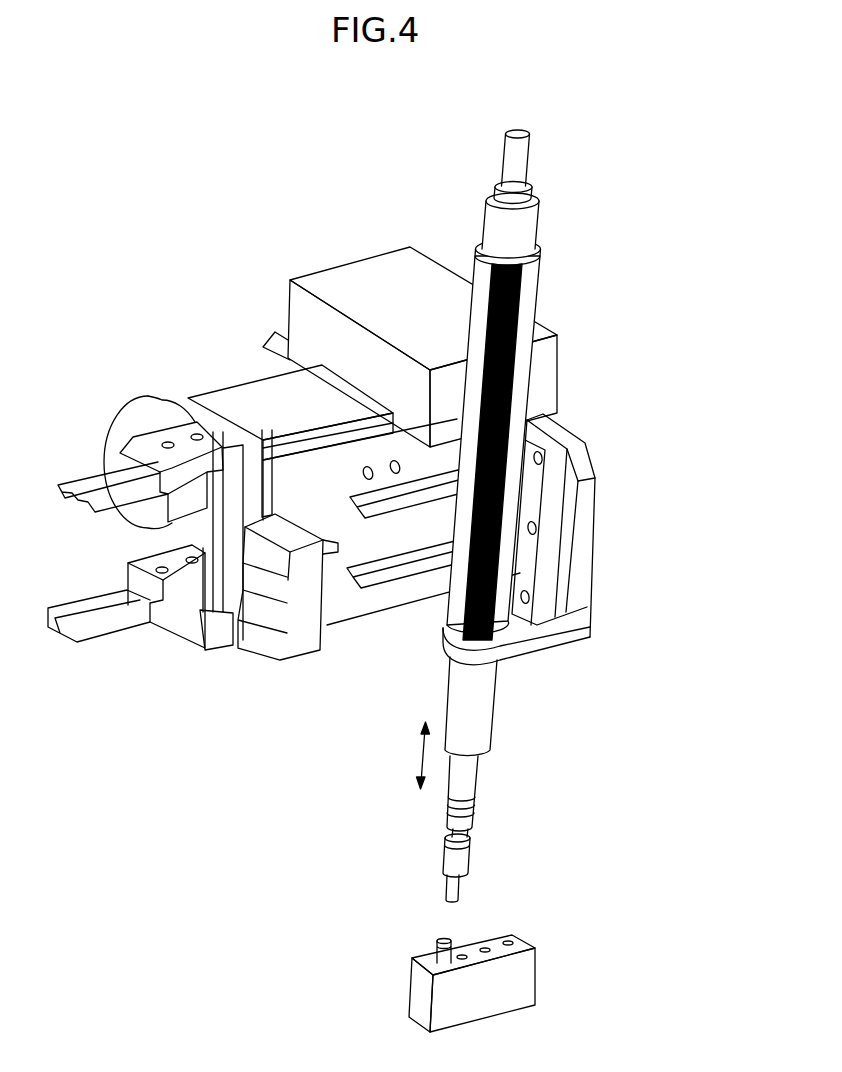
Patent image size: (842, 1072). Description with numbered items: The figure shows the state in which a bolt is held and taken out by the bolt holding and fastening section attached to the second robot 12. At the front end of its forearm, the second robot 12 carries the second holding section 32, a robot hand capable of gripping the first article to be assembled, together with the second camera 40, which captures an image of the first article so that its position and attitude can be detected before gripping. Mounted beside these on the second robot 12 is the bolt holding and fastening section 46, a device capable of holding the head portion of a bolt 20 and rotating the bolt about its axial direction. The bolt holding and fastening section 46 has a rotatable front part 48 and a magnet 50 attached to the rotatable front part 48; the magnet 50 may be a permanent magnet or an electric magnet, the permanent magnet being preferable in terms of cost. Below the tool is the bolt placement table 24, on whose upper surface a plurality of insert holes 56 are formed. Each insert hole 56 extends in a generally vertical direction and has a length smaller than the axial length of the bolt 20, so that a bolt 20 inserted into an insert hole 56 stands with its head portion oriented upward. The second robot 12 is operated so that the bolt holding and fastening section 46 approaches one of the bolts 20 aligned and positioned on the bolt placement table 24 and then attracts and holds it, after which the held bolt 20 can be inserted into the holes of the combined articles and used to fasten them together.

The second robot 12 is at (628, 209).
The bolt 20 is at (440, 937).
The bolt placement table 24 is at (415, 998).
The second holding section 32 is at (104, 628).
The second camera 40 is at (153, 400).
The bolt holding and fastening section 46 is at (480, 718).
The rotatable front part 48 is at (465, 822).
The magnet 50 is at (465, 857).
The insert holes 56 is at (508, 943).